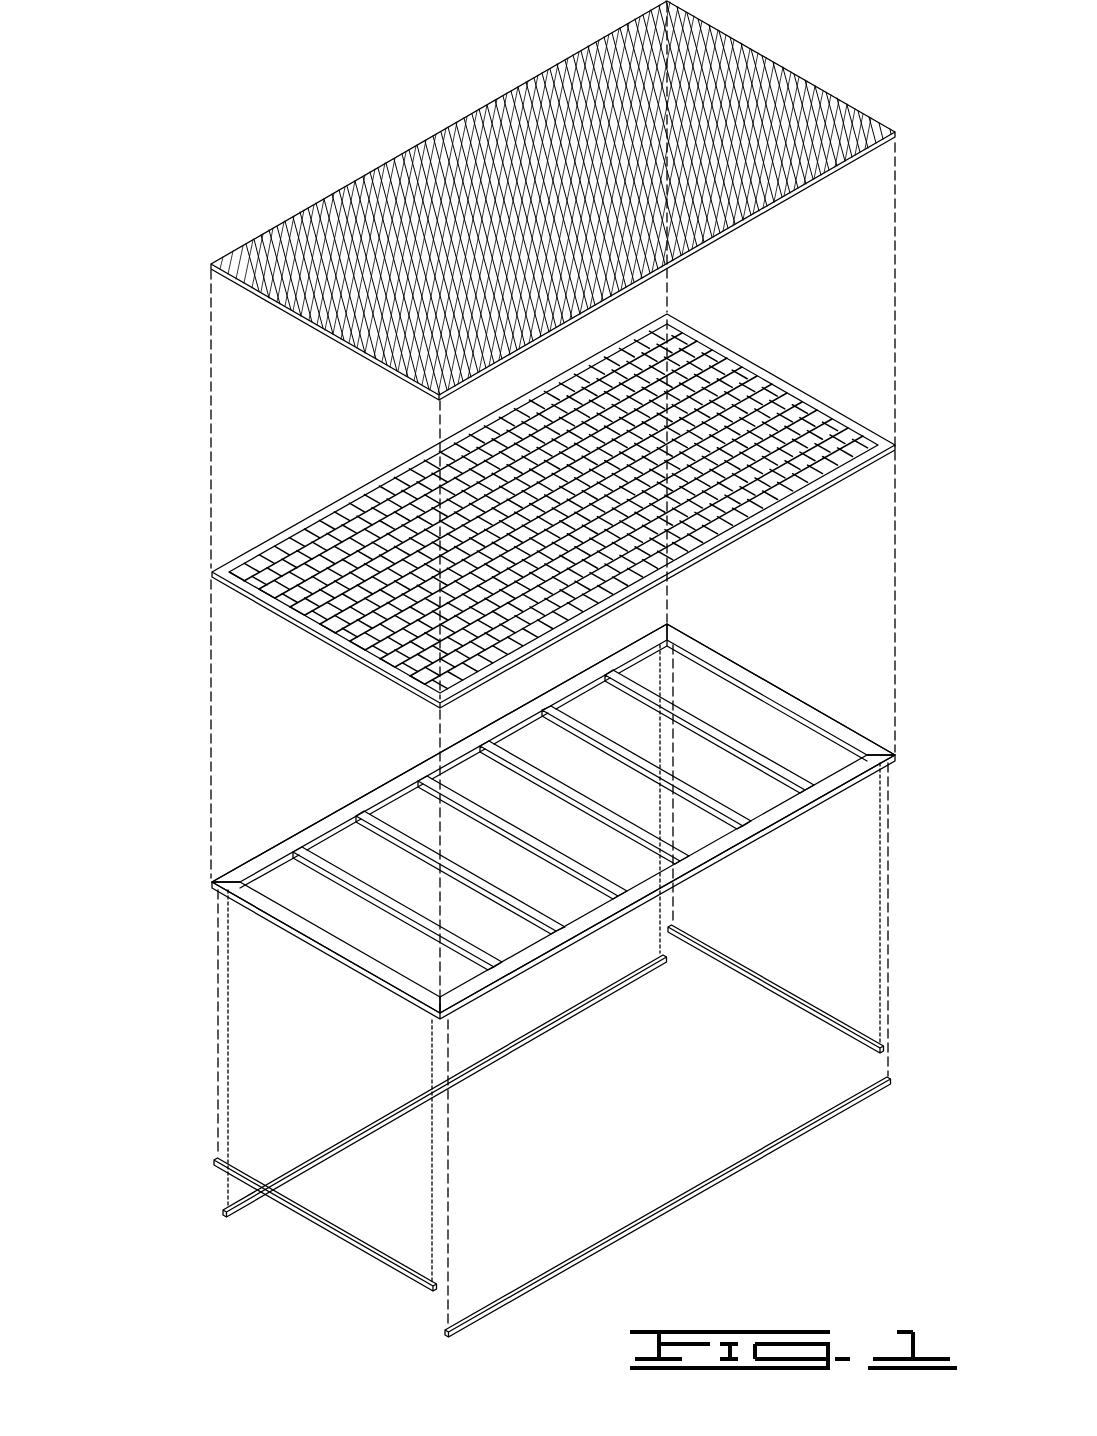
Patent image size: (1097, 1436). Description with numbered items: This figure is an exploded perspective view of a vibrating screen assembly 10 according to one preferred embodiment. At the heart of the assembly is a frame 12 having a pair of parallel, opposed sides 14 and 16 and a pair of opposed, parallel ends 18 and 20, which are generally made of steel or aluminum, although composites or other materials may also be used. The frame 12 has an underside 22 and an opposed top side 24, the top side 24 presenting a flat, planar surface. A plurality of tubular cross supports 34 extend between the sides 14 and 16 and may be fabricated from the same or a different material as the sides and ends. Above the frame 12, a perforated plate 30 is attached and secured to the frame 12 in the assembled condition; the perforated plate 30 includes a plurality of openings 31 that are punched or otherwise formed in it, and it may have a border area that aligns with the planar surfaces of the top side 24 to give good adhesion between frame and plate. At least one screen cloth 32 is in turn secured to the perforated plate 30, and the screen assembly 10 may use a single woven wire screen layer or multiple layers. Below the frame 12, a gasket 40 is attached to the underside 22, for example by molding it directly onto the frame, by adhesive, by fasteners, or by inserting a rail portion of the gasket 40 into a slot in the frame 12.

The vibrating screen assembly 10 is at (152, 92).
The frame 12 is at (780, 838).
The side 14 is at (705, 870).
The side 16 is at (390, 778).
The end 18 is at (813, 710).
The end 20 is at (333, 965).
The underside 22 is at (508, 1006).
The top side 24 is at (724, 632).
The perforated plate 30 is at (780, 538).
The openings 31 is at (736, 388).
The screen cloth 32 is at (838, 99).
The tubular cross supports 34 is at (733, 733).
The gasket 40 is at (790, 1003).